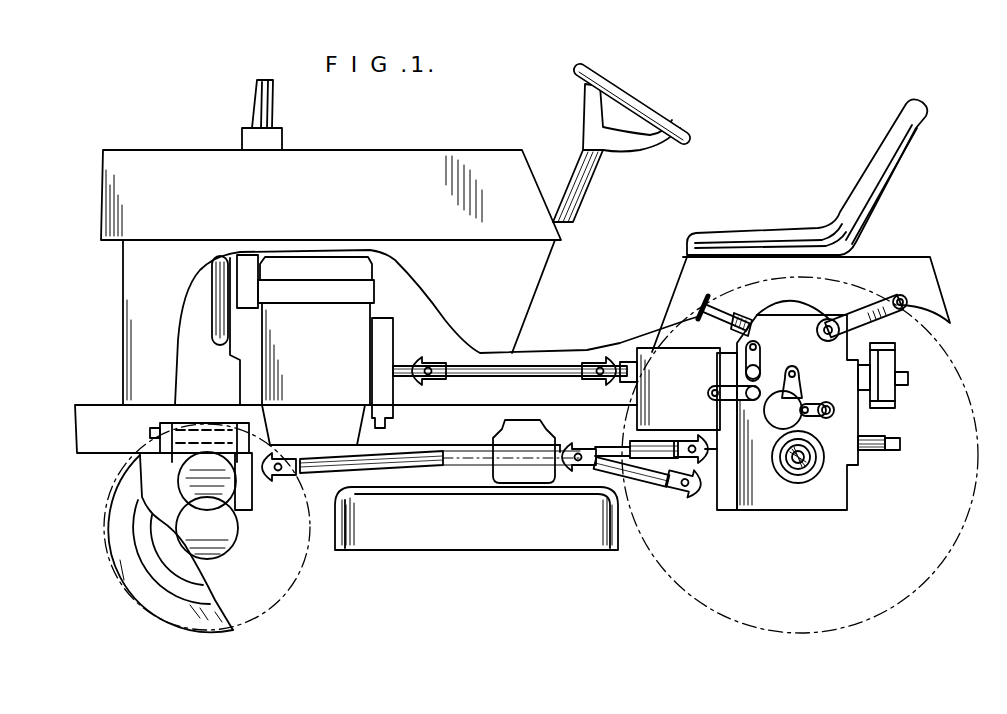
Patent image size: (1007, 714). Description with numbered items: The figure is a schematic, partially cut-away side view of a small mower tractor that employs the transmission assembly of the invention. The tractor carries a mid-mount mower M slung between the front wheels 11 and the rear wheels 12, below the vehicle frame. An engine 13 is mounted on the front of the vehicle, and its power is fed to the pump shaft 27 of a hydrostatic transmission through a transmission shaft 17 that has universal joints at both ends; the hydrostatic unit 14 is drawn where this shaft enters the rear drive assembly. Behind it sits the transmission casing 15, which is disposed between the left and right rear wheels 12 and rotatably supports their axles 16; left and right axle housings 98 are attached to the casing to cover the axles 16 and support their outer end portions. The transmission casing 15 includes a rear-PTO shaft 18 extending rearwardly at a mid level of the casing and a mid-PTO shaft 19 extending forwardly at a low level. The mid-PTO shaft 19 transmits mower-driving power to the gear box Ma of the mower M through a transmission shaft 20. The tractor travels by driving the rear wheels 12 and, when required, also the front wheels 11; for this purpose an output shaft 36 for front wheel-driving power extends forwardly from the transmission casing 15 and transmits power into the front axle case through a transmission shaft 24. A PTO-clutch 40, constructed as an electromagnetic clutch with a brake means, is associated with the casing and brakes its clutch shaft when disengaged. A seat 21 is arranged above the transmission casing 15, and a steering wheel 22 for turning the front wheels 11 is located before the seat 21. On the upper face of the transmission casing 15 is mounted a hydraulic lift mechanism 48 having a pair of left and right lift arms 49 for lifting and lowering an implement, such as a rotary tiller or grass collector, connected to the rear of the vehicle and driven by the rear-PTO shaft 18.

The front wheels 11 is at (178, 610).
The rear wheels 12 is at (951, 555).
The engine 13 is at (338, 323).
The hydrostatic transmission unit 14 is at (663, 368).
The transmission casing 15 is at (818, 497).
The axles 16 is at (818, 469).
The transmission shaft 17 is at (545, 368).
The rear-PTO shaft 18 is at (875, 437).
The mid-PTO shaft 19 is at (703, 490).
The transmission shaft 20 is at (613, 470).
The seat 21 is at (873, 170).
The steering wheel 22 is at (676, 114).
The transmission shaft 24 is at (417, 452).
The pump shaft 27 is at (622, 490).
The output shaft 36 is at (718, 446).
The PTO-clutch 40 is at (888, 363).
The hydraulic lift mechanism 48 is at (787, 337).
The lift arms 49 is at (892, 292).
The axle housings 98 is at (790, 483).
The mid-mount mower M is at (533, 528).
The gear box Ma is at (517, 470).